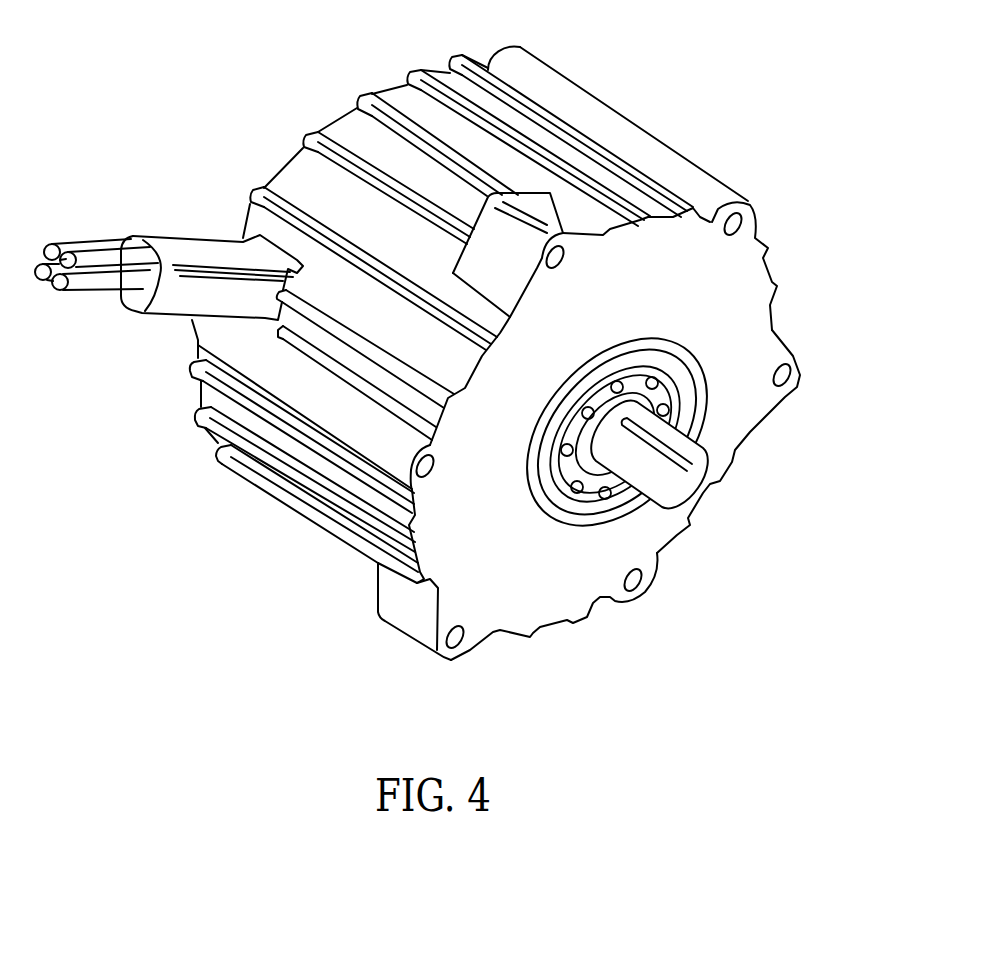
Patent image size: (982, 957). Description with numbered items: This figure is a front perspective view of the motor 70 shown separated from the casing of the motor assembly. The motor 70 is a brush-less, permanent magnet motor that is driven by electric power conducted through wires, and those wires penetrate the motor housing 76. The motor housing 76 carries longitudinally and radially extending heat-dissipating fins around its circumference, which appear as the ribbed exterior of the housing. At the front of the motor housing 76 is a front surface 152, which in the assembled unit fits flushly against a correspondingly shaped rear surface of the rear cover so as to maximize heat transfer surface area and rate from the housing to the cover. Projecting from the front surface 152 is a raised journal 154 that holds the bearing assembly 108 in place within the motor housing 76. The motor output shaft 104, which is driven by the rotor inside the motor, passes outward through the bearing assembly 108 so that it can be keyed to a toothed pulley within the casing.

The motor 70 is at (636, 118).
The motor housing 76 is at (673, 170).
The front surface 152 is at (680, 298).
The raised journal 154 is at (683, 370).
The bearing assembly 108 is at (585, 510).
The motor output shaft 104 is at (682, 493).